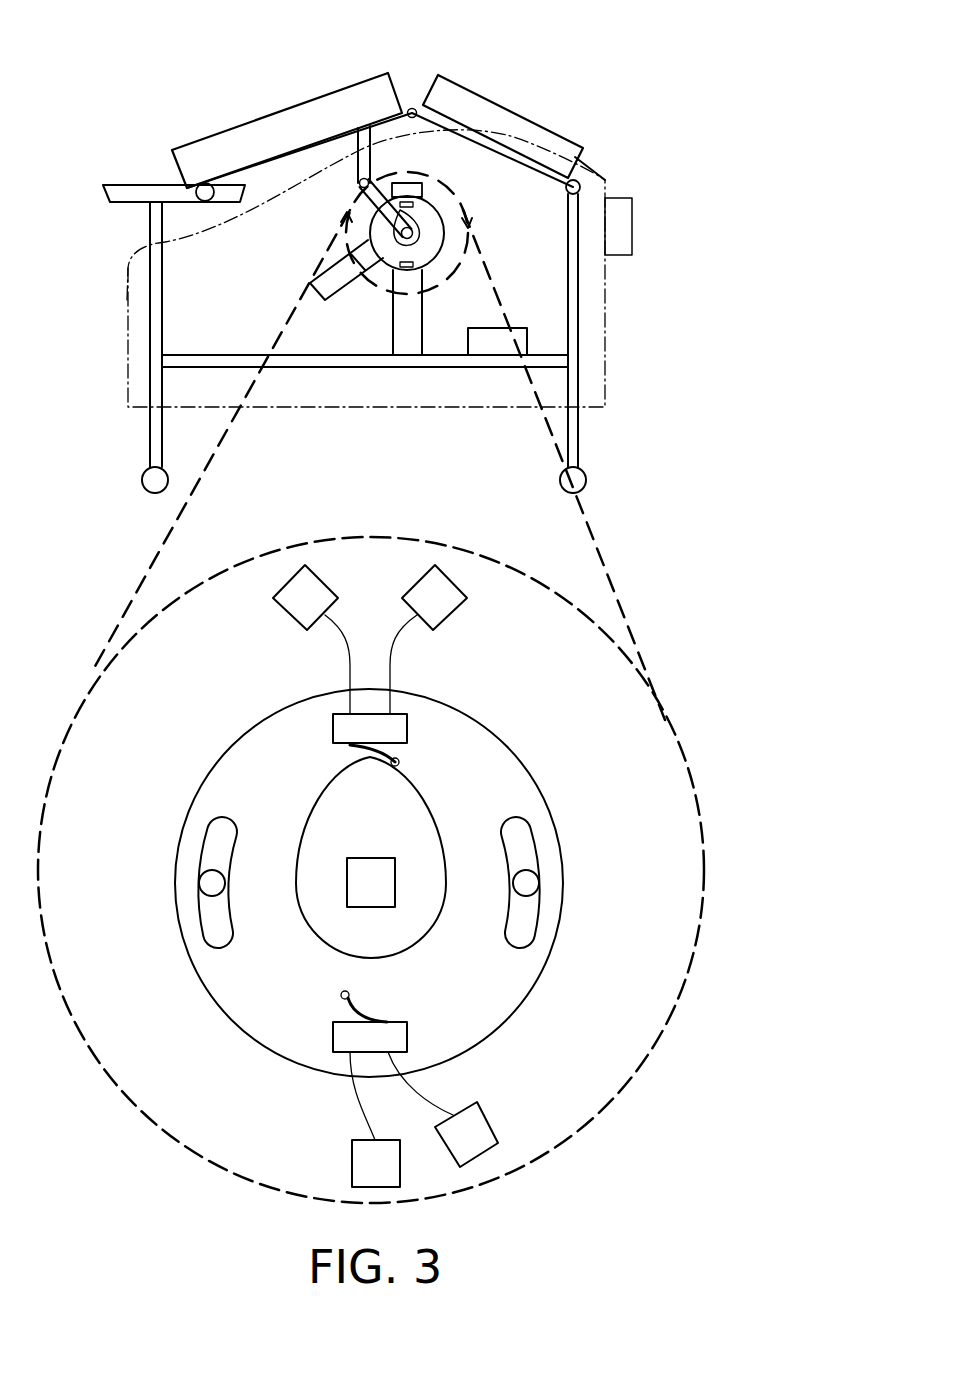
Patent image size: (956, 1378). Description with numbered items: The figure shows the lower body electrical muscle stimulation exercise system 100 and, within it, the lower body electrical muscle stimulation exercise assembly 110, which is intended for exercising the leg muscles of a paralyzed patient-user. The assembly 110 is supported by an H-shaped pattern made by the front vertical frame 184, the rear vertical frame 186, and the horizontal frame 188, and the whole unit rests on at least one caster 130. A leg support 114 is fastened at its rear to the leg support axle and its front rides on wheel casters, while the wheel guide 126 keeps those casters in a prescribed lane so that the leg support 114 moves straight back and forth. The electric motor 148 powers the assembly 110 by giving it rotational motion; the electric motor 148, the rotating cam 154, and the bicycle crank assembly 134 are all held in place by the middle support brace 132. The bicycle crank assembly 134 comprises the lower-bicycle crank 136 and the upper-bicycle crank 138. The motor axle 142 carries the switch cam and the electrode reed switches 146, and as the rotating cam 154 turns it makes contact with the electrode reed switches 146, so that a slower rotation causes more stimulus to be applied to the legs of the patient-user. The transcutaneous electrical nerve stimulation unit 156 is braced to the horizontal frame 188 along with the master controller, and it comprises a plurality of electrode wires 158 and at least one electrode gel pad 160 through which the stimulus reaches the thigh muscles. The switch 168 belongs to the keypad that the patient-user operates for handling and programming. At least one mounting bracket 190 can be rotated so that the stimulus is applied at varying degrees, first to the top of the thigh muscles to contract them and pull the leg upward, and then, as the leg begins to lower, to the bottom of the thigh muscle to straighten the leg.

The lower body electrical muscle stimulation exercise system 100 is at (682, 93).
The lower body electrical muscle stimulation exercise assembly 110 is at (712, 130).
The leg support 114 is at (260, 128).
The wheel guide 126 is at (123, 192).
The caster 130 is at (147, 478).
The middle support brace 132 is at (405, 368).
The bicycle crank assembly 134 is at (357, 188).
The lower-bicycle crank 136 is at (370, 225).
The upper-bicycle crank 138 is at (368, 160).
The motor axle 142 is at (383, 903).
The electrode reed switches 146 is at (415, 193).
The electric motor 148 is at (333, 283).
The rotating cam 154 is at (410, 818).
The transcutaneous electrical nerve stimulation unit 156 is at (518, 328).
The electrode wires 158 is at (392, 668).
The electrode gel pad 160 is at (295, 608).
The switch 168 is at (633, 210).
The front vertical frame 184 is at (150, 432).
The rear vertical frame 186 is at (580, 433).
The horizontal frame 188 is at (287, 360).
The mounting bracket 190 is at (205, 884).